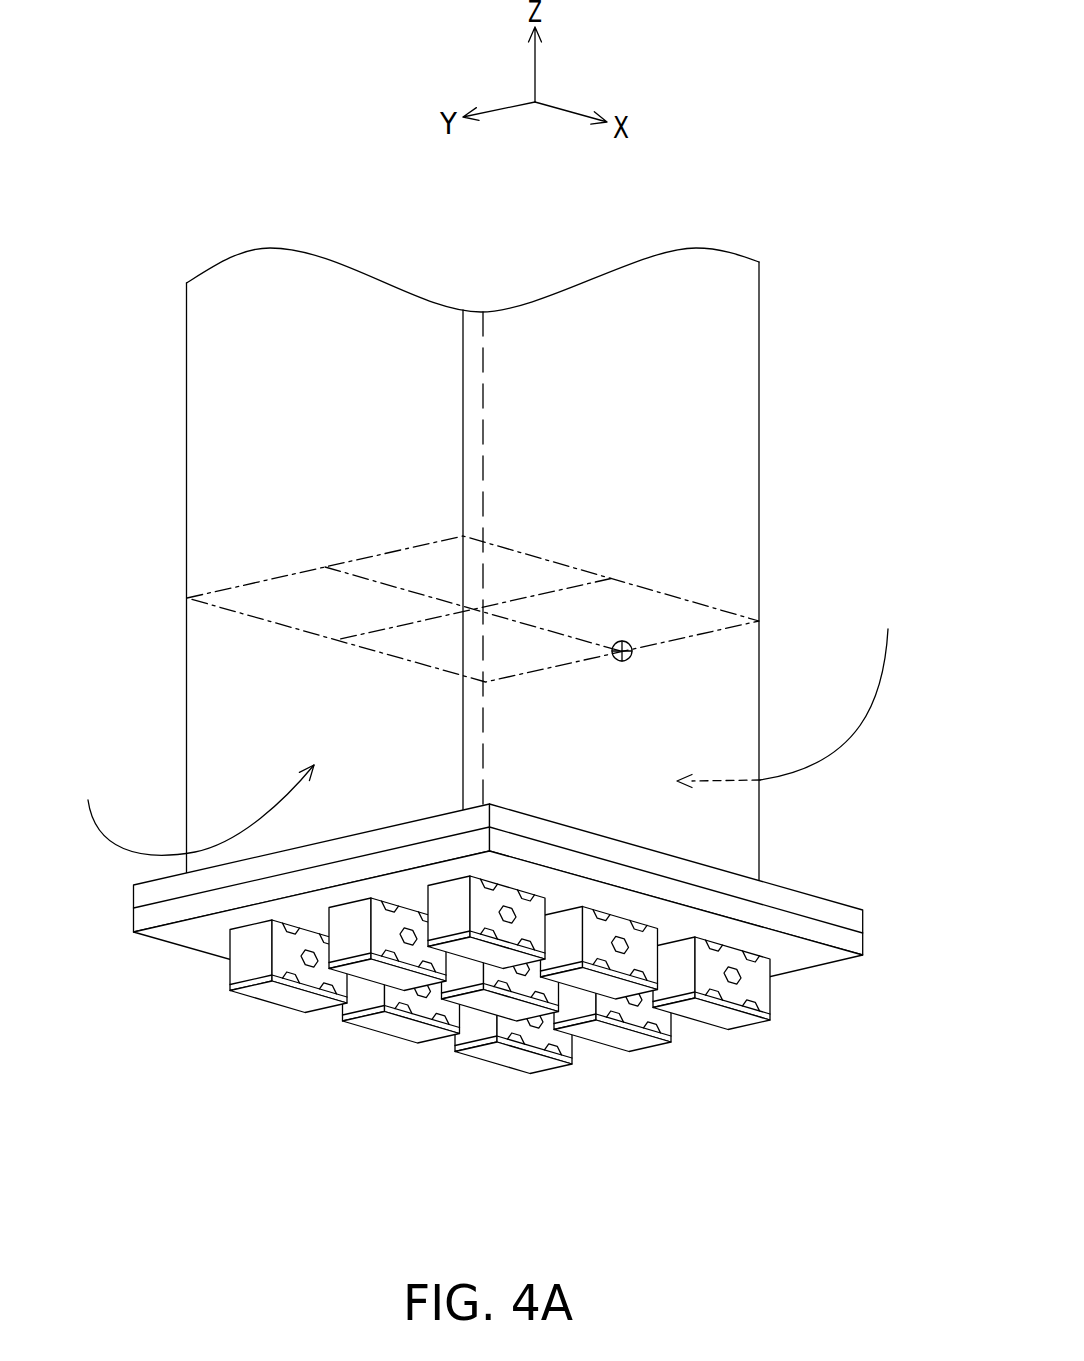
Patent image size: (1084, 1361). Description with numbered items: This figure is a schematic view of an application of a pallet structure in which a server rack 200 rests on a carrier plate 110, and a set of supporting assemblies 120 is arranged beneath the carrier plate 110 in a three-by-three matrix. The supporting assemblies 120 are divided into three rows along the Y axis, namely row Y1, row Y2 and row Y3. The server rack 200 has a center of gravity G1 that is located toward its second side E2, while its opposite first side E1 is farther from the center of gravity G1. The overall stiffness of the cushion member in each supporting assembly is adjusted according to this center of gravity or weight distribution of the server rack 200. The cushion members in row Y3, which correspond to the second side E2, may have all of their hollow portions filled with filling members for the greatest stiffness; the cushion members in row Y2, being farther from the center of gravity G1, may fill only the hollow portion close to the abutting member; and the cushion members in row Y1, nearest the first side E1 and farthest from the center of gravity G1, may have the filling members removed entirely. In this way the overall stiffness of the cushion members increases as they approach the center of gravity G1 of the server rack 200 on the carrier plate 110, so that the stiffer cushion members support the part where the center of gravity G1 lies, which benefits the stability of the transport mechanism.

The server rack 200 is at (720, 292).
The carrier plate 110 is at (863, 933).
The supporting assemblies 120 is at (433, 1064).
The center of gravity G1 is at (634, 650).
The first side E1 is at (193, 810).
The second side E2 is at (790, 693).
The row Y1 is at (222, 966).
The row Y2 is at (375, 1048).
The row Y3 is at (478, 1082).